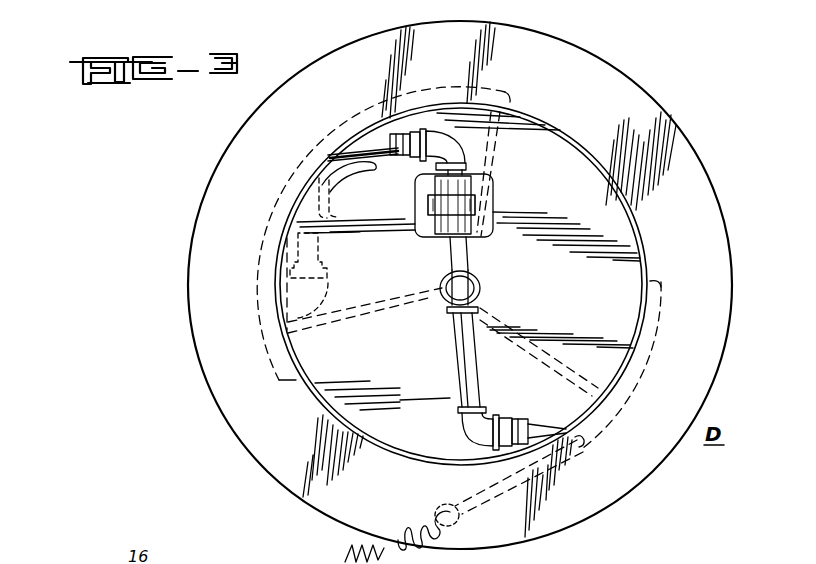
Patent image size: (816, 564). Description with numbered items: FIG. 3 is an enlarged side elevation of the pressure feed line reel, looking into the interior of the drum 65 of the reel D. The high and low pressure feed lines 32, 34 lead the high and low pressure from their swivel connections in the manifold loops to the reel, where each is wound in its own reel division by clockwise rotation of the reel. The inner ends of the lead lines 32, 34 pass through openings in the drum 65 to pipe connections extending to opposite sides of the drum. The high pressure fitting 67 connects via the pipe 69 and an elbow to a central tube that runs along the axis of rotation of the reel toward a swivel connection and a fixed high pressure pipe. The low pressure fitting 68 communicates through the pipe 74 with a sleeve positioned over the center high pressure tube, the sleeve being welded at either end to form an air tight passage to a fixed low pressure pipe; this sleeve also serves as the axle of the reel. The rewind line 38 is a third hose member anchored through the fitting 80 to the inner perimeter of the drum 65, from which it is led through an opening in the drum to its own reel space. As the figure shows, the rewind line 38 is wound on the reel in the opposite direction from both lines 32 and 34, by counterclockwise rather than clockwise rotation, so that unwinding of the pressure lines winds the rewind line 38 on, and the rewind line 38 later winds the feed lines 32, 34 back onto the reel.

The high pressure feed line 32 is at (638, 382).
The low pressure feed line 34 is at (383, 155).
The rewind line 38 is at (500, 92).
The drum 65 is at (641, 270).
The high pressure fitting 67 is at (465, 426).
The low pressure fitting 68 is at (460, 147).
The pipe 69 is at (458, 357).
The pipe 74 is at (470, 247).
The fitting 80 is at (325, 290).